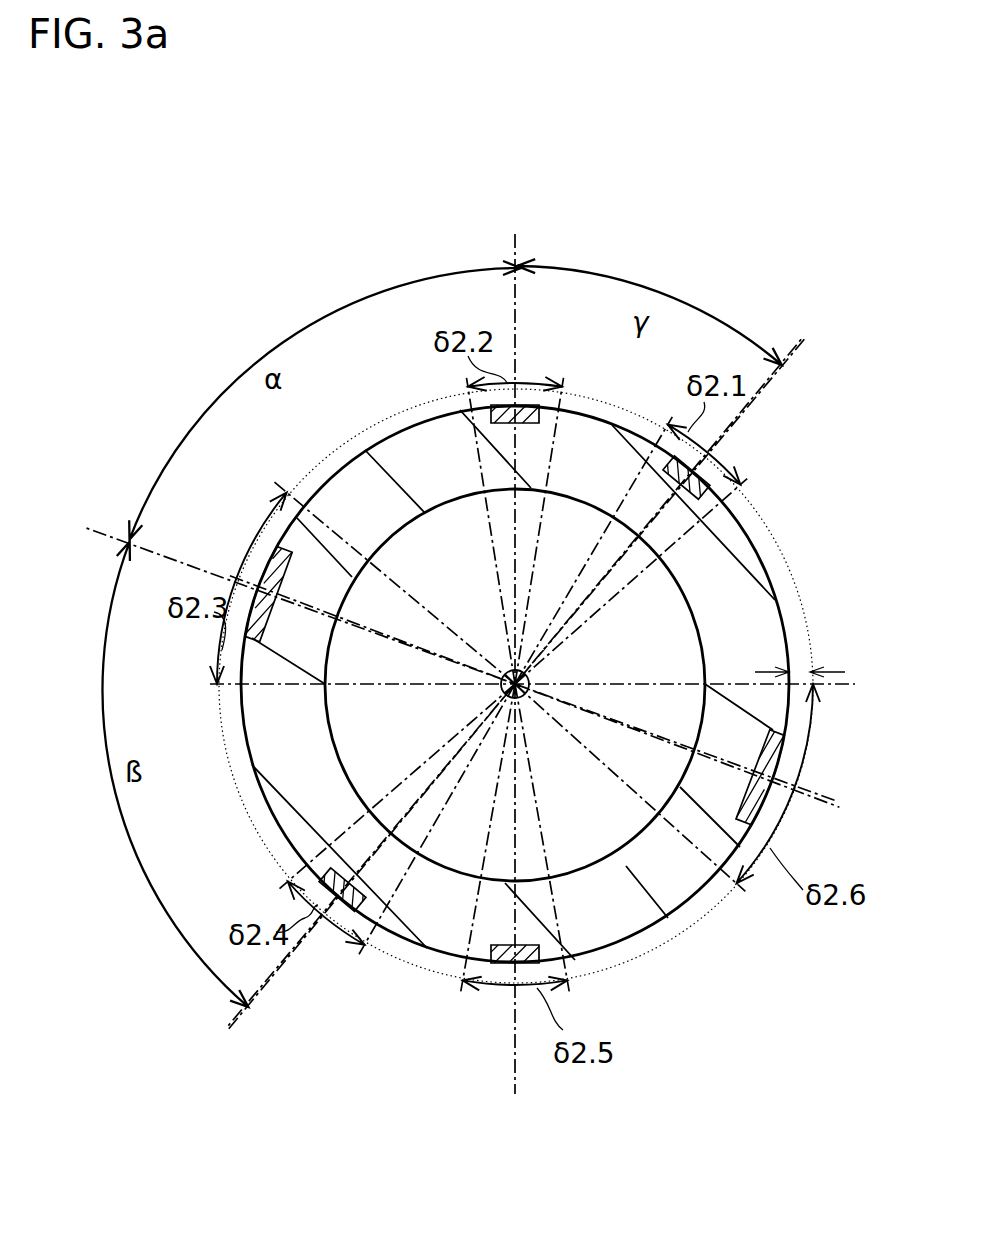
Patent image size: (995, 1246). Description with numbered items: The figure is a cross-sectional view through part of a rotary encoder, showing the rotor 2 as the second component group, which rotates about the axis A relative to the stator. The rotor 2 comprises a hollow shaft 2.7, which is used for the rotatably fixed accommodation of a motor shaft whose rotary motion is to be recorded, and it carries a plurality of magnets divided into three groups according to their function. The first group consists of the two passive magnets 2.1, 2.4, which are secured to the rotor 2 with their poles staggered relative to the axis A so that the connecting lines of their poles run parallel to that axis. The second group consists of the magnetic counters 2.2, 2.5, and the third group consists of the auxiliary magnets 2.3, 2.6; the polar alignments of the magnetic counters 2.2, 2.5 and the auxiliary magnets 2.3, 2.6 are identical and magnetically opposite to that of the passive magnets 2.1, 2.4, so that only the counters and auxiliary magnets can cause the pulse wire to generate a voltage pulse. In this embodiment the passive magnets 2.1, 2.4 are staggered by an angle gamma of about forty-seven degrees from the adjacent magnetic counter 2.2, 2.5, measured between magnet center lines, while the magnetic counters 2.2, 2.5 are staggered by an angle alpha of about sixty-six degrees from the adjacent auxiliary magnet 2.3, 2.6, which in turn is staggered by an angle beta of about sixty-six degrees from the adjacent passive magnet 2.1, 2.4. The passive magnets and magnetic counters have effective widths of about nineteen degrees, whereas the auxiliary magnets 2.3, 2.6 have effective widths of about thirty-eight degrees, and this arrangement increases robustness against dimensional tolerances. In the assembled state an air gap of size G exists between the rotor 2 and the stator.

The rotor 2 is at (372, 606).
The passive magnet 2.1 is at (712, 492).
The magnetic counter 2.2 is at (502, 423).
The auxiliary magnet 2.3 is at (284, 578).
The passive magnet 2.4 is at (328, 876).
The magnetic counter 2.5 is at (492, 965).
The auxiliary magnet 2.6 is at (752, 776).
The hollow shaft 2.7 is at (613, 888).
The axis A is at (536, 705).
The air gap G is at (798, 672).